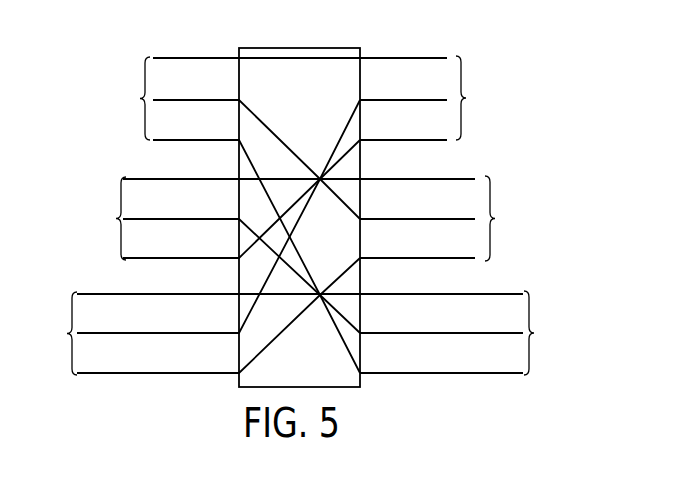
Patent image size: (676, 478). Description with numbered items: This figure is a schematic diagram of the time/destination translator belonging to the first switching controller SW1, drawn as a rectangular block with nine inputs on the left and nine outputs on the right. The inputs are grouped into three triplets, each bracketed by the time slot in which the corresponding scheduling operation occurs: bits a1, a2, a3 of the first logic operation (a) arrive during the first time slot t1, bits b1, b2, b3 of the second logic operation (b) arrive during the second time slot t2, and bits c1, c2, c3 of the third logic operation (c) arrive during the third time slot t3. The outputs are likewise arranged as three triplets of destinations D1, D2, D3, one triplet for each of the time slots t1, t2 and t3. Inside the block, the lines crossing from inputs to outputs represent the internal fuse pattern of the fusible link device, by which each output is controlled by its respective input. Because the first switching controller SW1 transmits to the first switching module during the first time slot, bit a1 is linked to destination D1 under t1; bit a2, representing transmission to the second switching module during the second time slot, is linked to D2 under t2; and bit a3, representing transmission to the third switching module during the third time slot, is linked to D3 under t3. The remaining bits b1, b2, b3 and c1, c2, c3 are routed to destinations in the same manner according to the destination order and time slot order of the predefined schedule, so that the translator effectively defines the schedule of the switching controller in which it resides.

The first switching controller SW1 is at (299, 217).
The bit a1 of the first scheduling operation a1 is at (300, 42).
The bit a2 of the first scheduling operation a2 is at (256, 143).
The bit a3 of the first scheduling operation a3 is at (256, 240).
The bit b1 of the second scheduling operation b1 is at (299, 163).
The bit b2 of the second scheduling operation b2 is at (241, 260).
The bit b3 of the second scheduling operation b3 is at (241, 199).
The bit c1 of the third scheduling operation c1 is at (300, 278).
The bit c2 of the third scheduling operation c2 is at (218, 216).
The bit c3 of the third scheduling operation c3 is at (218, 315).
The first destination D1 is at (441, 165).
The second destination D2 is at (441, 206).
The third destination D3 is at (441, 245).
The first time slot t1 is at (312, 98).
The second time slot t2 is at (310, 218).
The third time slot t3 is at (306, 333).